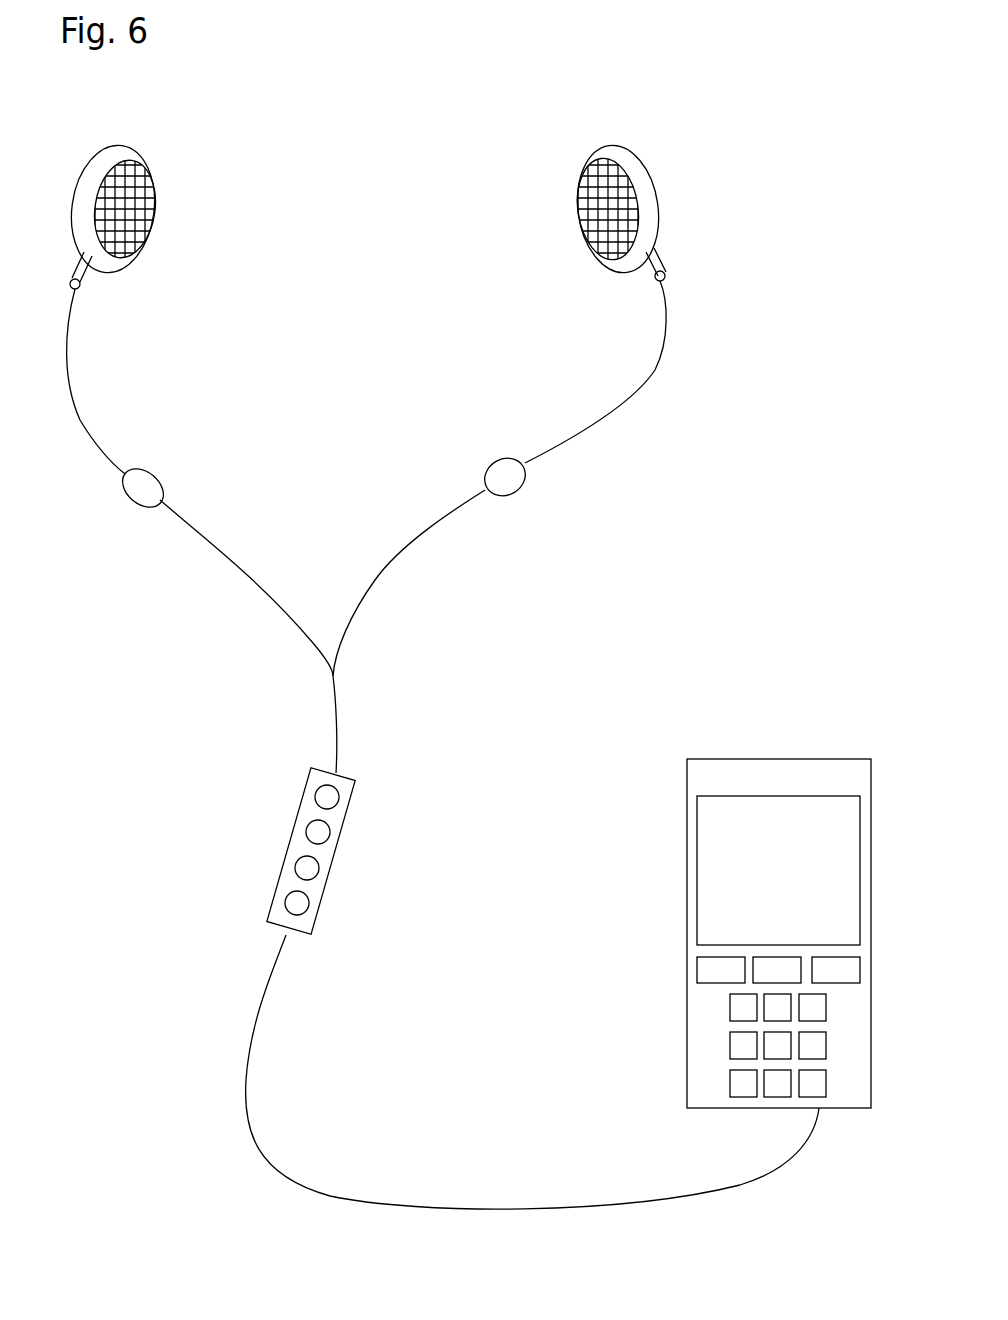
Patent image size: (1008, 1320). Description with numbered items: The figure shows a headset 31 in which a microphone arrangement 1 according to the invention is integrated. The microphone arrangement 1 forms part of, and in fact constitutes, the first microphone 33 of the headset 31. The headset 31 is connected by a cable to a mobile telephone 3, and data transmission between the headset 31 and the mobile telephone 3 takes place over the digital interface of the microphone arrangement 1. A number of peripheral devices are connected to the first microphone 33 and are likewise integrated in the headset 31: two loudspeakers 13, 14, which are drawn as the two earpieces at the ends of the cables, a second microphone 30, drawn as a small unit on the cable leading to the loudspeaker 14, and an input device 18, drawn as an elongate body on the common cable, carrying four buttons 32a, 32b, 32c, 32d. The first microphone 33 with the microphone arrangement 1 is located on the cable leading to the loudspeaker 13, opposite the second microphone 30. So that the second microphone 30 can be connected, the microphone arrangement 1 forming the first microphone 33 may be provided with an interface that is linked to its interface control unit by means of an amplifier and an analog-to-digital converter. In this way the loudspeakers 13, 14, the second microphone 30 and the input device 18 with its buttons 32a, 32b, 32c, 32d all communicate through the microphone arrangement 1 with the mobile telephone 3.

The microphone arrangement 1 is at (143, 482).
The mobile telephone 3 is at (765, 805).
The loudspeaker 13 is at (137, 220).
The loudspeaker 14 is at (593, 218).
The input device 18 is at (314, 854).
The second microphone 30 is at (513, 482).
The headset 31 is at (527, 582).
The button 32a is at (327, 797).
The button 32b is at (318, 832).
The button 32c is at (307, 868).
The button 32d is at (297, 903).
The first microphone 33 is at (103, 540).